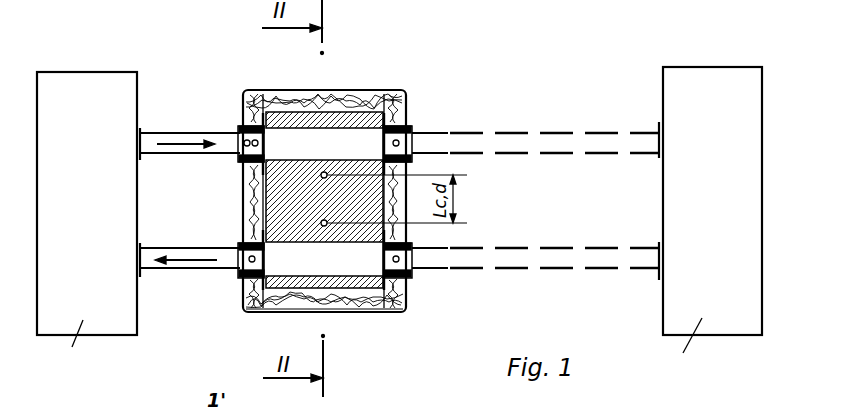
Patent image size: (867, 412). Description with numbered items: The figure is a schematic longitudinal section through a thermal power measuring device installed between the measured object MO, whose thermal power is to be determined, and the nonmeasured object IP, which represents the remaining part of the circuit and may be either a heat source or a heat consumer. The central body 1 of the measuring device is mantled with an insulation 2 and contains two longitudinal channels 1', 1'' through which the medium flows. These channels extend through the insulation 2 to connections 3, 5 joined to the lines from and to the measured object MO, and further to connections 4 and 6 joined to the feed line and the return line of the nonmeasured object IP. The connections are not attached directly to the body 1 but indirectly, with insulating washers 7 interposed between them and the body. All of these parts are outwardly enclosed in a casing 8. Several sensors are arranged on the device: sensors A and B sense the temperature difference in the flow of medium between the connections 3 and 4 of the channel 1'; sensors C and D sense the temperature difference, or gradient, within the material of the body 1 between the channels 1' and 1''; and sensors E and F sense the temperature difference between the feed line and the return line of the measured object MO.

The measured object MO is at (85, 85).
The nonmeasured object IP is at (702, 85).
The body 1 is at (289, 201).
The longitudinal channel 1' is at (324, 93).
The longitudinal channel 1'' is at (322, 306).
The insulation 2 is at (243, 303).
The connection 3 is at (238, 163).
The connection 4 is at (406, 123).
The connection 5 is at (238, 243).
The connection 6 is at (407, 290).
The insulating washer 7 is at (253, 90).
The casing 8 is at (365, 313).
The sensor A is at (237, 133).
The sensor B is at (400, 135).
The sensor C is at (324, 172).
The sensor D is at (325, 226).
The sensor E is at (240, 127).
The sensor F is at (238, 272).